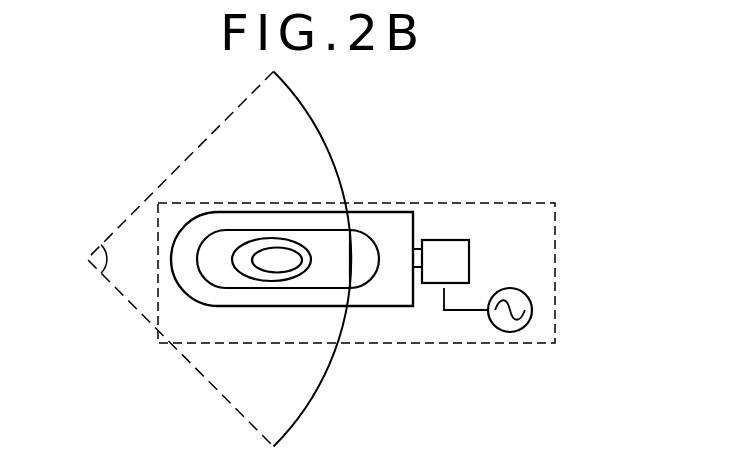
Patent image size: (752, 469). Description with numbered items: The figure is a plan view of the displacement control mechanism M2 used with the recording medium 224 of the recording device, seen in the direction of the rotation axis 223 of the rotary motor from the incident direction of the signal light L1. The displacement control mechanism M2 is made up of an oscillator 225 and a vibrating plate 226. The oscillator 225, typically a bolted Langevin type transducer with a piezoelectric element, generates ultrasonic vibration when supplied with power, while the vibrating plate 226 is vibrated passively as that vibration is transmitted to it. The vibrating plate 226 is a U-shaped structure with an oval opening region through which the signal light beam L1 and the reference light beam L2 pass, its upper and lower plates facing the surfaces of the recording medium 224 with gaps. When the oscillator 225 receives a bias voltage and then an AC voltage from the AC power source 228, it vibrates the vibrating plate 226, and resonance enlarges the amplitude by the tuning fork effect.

The rotation axis 223 is at (104, 258).
The recording medium 224 is at (293, 127).
The displacement control mechanism M2 is at (492, 203).
The vibrating plate 226 is at (390, 212).
The signal light beam L1 is at (271, 255).
The reference light beam L2 is at (247, 288).
The oscillator 225 is at (469, 262).
The AC power source 228 is at (532, 318).